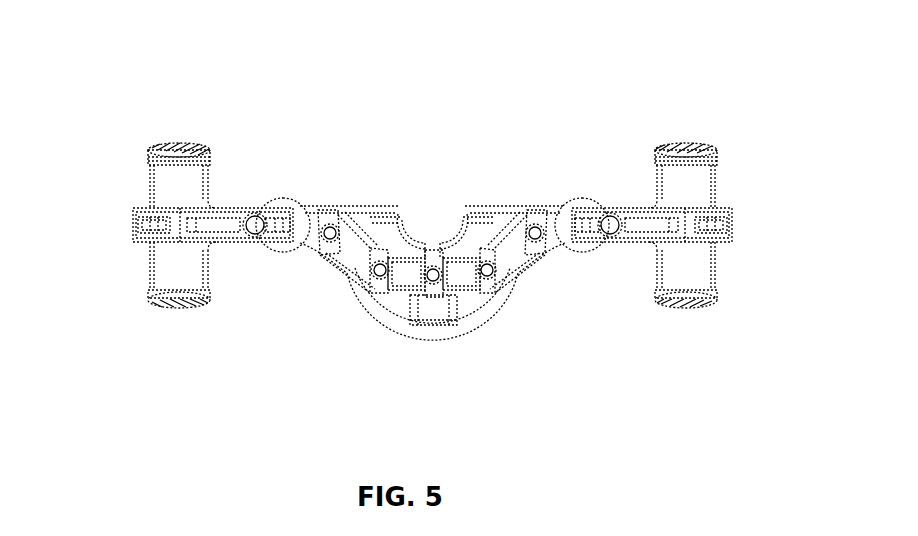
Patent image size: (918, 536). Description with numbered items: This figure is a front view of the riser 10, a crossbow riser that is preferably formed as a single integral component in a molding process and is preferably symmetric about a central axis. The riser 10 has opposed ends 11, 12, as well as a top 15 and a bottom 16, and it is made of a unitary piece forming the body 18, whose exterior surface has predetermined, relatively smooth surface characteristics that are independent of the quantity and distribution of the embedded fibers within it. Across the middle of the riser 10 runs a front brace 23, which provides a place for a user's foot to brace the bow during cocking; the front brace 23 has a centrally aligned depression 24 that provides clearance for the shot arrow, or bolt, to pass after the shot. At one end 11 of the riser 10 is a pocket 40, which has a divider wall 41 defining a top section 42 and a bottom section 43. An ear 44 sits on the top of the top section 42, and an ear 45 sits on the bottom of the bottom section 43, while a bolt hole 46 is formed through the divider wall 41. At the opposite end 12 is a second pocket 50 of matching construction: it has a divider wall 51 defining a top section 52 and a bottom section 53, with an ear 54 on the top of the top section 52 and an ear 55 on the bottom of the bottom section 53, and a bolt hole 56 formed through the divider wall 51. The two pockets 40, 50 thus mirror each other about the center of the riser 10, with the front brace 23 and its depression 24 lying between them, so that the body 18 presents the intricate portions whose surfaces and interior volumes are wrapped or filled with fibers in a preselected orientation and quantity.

The riser 10 is at (357, 174).
The end 11 is at (180, 198).
The end 12 is at (676, 198).
The top 15 is at (502, 207).
The bottom 16 is at (407, 318).
The body 18 is at (538, 207).
The front brace 23 is at (505, 253).
The centrally aligned depression 24 is at (453, 270).
The pocket 40 is at (172, 238).
The divider wall 41 is at (157, 222).
The top section 42 is at (177, 188).
The bottom section 43 is at (167, 257).
The ear 44 is at (162, 158).
The ear 45 is at (187, 290).
The bolt hole 46 is at (250, 229).
The second pocket 50 is at (684, 238).
The divider wall 51 is at (733, 225).
The top section 52 is at (685, 190).
The bottom section 53 is at (687, 263).
The ear 54 is at (680, 168).
The ear 55 is at (697, 288).
The bolt hole 56 is at (610, 230).